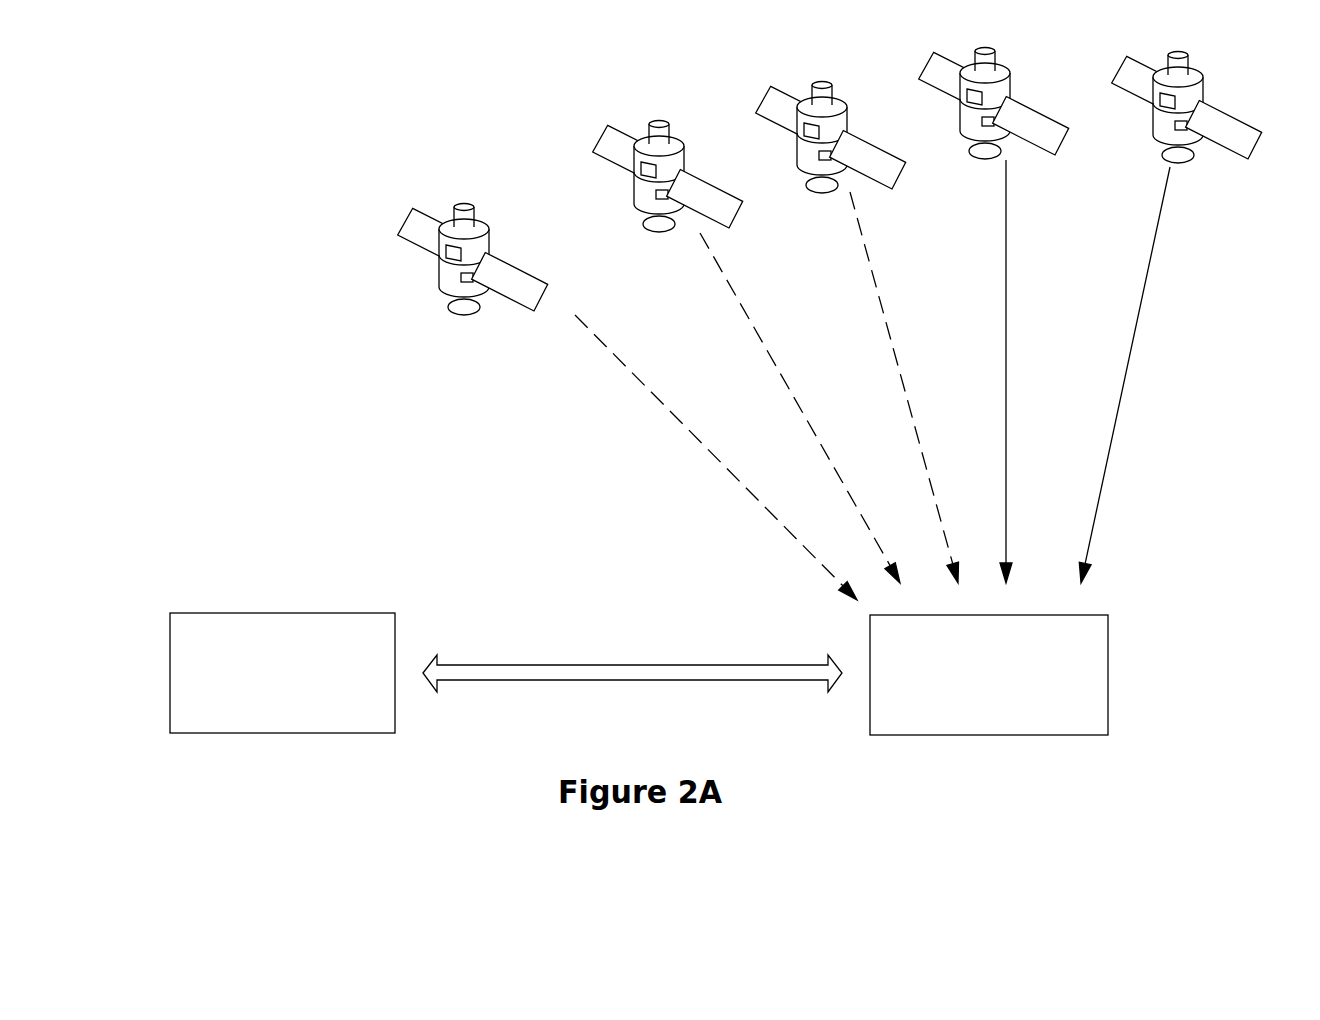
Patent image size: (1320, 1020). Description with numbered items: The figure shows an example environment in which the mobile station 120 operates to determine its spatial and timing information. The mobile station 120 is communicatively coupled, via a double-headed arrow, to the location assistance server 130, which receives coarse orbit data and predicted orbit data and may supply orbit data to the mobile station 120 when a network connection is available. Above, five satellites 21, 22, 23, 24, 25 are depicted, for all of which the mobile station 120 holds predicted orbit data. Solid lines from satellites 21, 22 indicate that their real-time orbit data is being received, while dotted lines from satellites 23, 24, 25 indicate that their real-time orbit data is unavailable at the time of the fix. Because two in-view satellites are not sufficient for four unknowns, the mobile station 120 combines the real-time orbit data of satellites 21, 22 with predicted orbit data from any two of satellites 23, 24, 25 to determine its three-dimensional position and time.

The satellite 21 is at (1170, 318).
The satellite 22 is at (994, 316).
The satellite 23 is at (857, 331).
The satellite 24 is at (746, 352).
The satellite 25 is at (627, 402).
The mobile station 120 is at (1005, 700).
The location assistance server 130 is at (332, 700).